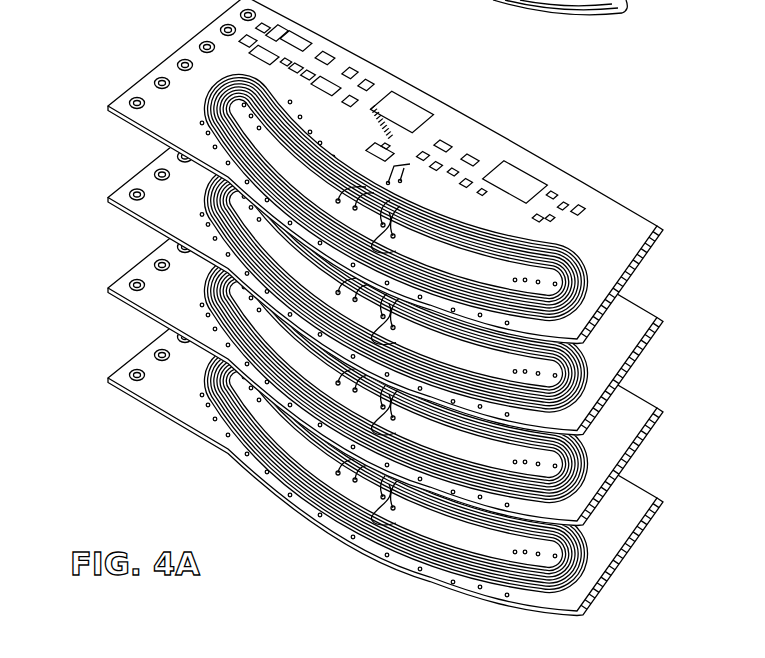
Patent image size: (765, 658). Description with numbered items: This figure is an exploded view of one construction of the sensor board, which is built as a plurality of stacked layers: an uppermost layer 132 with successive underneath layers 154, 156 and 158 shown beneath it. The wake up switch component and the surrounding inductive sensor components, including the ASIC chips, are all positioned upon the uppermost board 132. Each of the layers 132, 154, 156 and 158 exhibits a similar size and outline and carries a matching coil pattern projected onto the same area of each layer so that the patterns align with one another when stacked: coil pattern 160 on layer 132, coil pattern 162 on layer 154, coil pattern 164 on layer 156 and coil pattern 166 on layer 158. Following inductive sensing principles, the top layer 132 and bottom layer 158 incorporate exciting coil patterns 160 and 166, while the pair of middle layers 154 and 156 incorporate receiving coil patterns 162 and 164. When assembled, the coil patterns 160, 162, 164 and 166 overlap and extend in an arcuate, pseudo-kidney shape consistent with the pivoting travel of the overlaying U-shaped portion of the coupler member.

The uppermost layer 132 is at (160, 112).
The underneath layer 154 is at (157, 207).
The underneath layer 156 is at (157, 293).
The underneath layer 158 is at (157, 390).
The coil pattern 160 is at (563, 250).
The coil pattern 162 is at (583, 353).
The coil pattern 164 is at (583, 447).
The coil pattern 166 is at (577, 551).